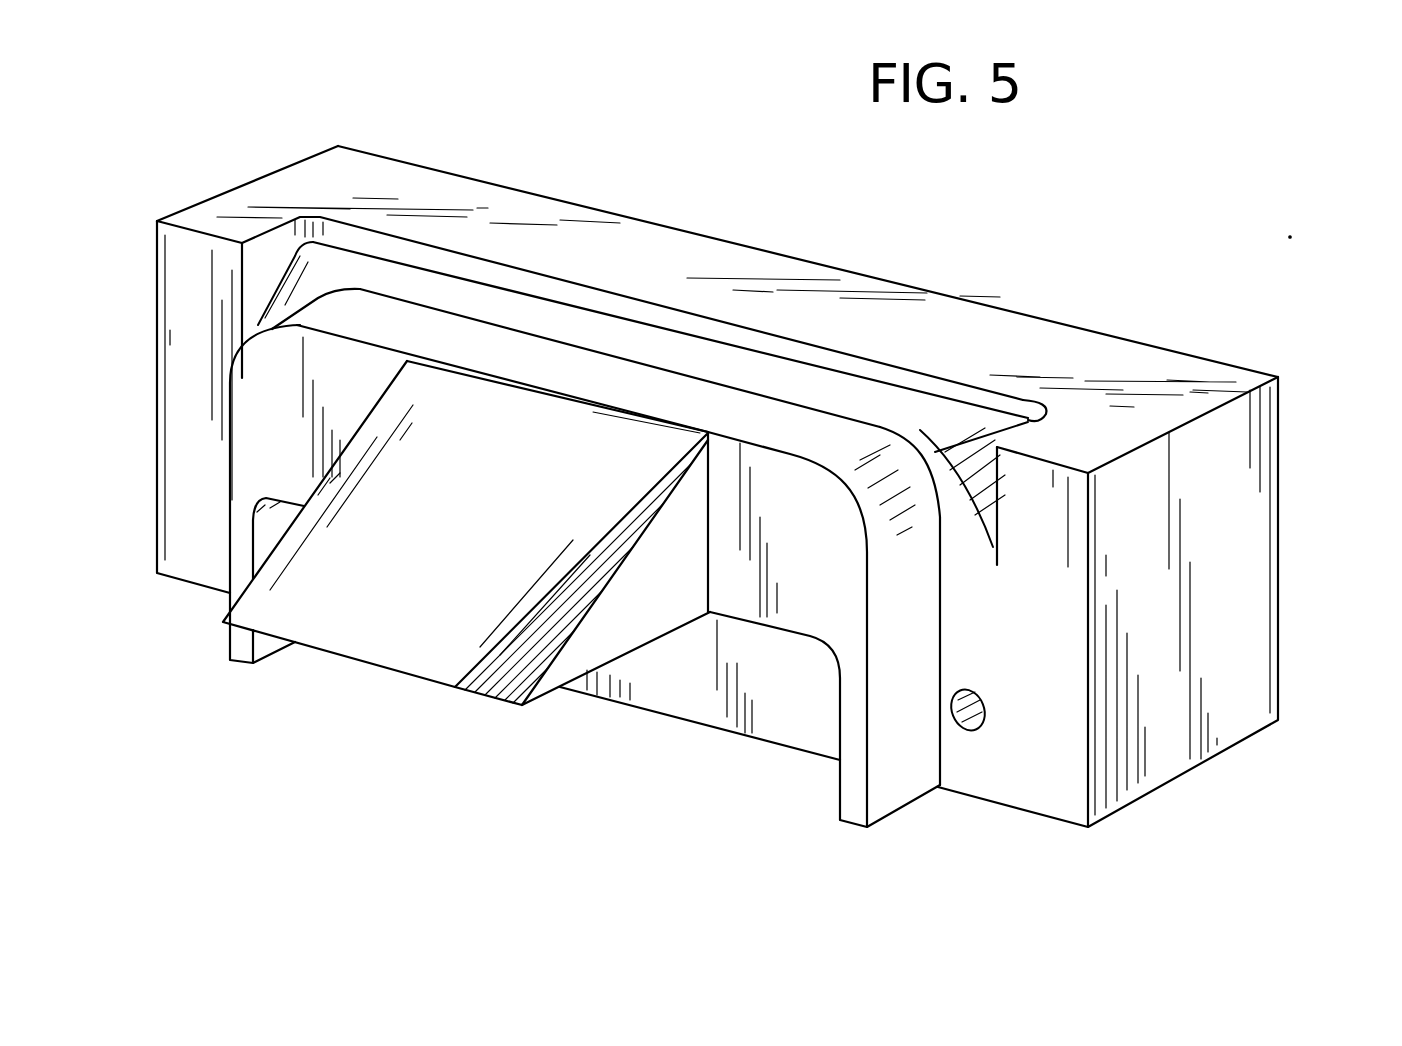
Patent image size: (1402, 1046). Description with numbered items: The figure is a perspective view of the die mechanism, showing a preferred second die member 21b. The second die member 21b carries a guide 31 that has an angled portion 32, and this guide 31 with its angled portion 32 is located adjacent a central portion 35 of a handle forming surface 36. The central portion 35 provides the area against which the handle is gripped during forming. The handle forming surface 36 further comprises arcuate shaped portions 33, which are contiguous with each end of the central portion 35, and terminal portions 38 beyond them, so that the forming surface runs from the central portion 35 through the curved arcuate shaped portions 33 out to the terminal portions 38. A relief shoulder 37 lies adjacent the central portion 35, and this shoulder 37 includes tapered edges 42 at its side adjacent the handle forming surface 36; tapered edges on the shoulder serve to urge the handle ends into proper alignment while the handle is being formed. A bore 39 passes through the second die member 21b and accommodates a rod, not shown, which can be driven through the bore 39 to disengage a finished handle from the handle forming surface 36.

The second die member 21b is at (1245, 510).
The guide 31 is at (453, 688).
The angled portion 32 is at (507, 597).
The arcuate shaped portions 33 is at (247, 338).
The central portion 35 is at (520, 415).
The handle forming surface 36 is at (645, 420).
The relief shoulder 37 is at (893, 413).
The terminal portions 38 is at (897, 790).
The bore 39 is at (980, 737).
The tapered edges 42 is at (313, 255).